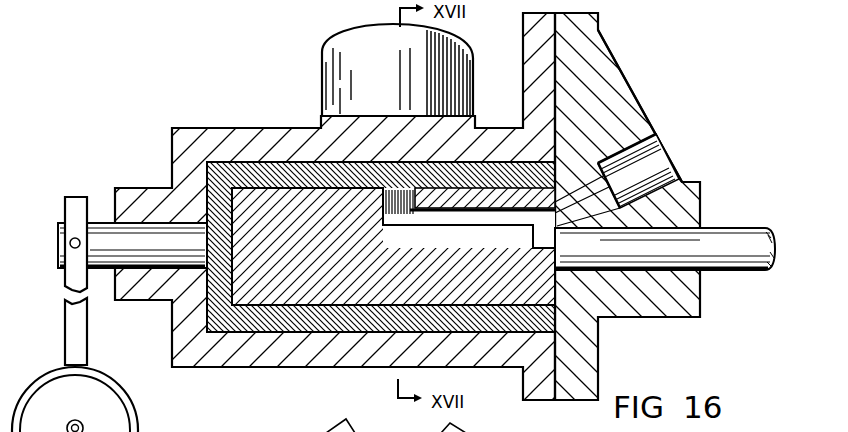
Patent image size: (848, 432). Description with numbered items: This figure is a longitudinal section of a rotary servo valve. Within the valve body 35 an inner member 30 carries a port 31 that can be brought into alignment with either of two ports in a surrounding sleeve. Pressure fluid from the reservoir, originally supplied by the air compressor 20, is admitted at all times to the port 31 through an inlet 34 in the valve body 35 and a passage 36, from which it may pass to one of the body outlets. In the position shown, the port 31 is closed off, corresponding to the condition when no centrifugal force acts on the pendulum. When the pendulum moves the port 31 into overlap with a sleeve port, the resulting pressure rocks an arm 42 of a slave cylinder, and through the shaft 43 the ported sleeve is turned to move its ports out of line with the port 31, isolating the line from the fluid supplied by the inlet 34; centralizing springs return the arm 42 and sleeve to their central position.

The air compressor 20 is at (692, 240).
The inner member 30 is at (598, 321).
The port 31 is at (420, 188).
The inlet 34 is at (652, 136).
The valve body 35 is at (617, 88).
The passage 36 is at (469, 218).
The arm 42 is at (62, 268).
The shaft 43 is at (115, 225).